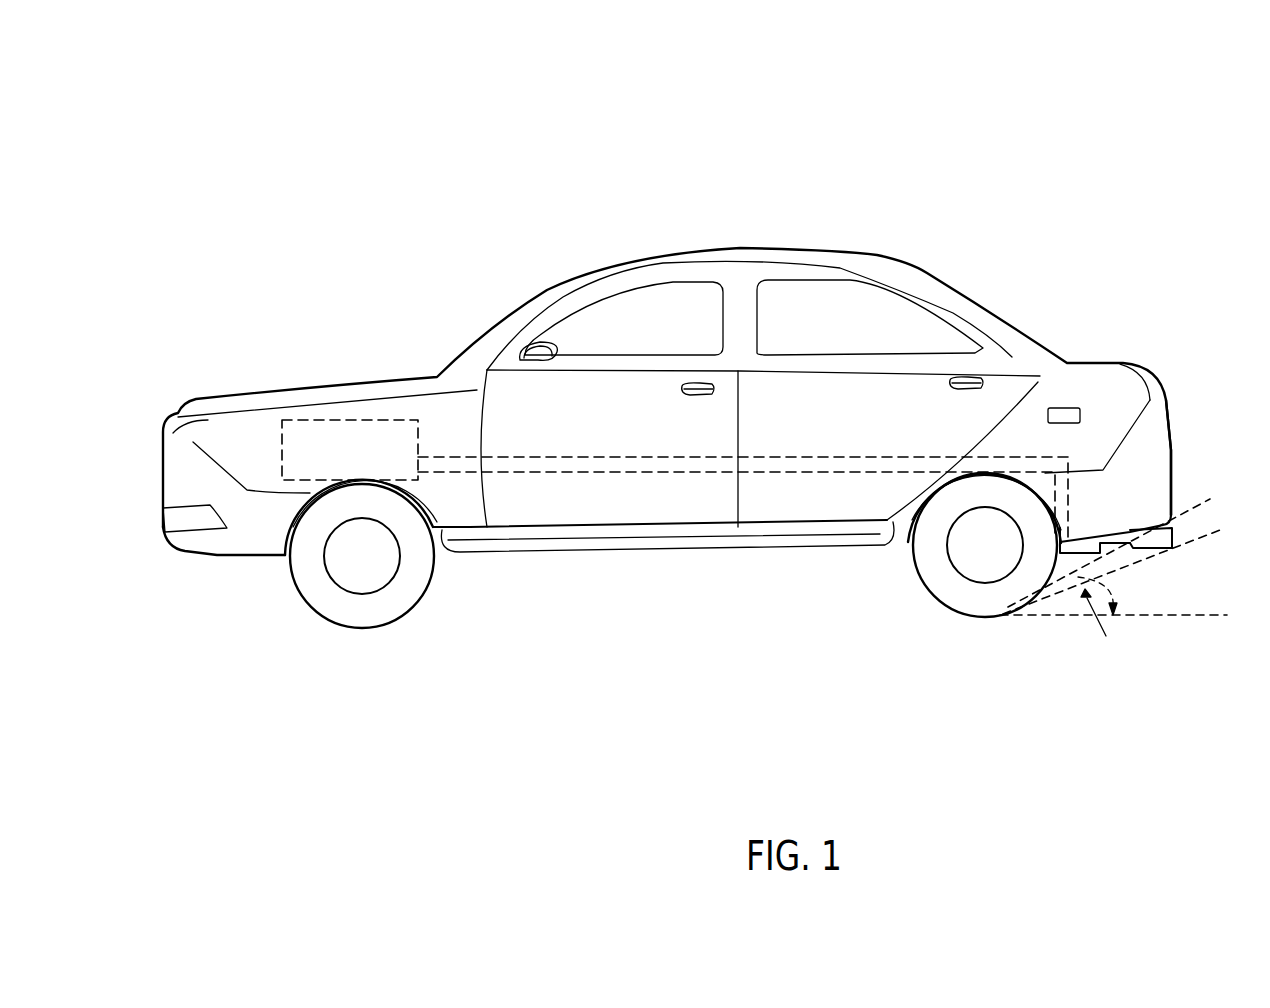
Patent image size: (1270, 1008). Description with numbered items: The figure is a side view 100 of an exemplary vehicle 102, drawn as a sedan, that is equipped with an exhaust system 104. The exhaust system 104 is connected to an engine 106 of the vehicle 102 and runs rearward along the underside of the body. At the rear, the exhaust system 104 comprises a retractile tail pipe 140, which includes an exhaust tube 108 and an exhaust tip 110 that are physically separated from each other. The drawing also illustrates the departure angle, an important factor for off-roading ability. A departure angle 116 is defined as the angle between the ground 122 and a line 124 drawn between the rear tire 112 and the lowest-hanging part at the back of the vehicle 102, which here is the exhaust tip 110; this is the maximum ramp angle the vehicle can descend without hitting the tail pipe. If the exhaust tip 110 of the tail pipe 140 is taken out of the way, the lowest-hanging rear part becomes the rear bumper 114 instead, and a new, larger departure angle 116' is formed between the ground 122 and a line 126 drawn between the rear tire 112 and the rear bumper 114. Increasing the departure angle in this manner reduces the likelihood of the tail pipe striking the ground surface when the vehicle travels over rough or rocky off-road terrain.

The side view 100 is at (203, 80).
The vehicle 102 is at (970, 210).
The exhaust system 104 is at (892, 440).
The engine 106 is at (343, 419).
The exhaust tube 108 is at (1082, 538).
The exhaust tip 110 is at (1143, 541).
The rear tire 112 is at (917, 577).
The rear bumper 114 is at (1178, 483).
The departure angle 116 is at (1129, 596).
The new departure angle 116' is at (1109, 624).
The ground 122 is at (1213, 618).
The line 124 is at (1212, 532).
The line 126 is at (1200, 502).
The retractile tail pipe 140 is at (1178, 558).